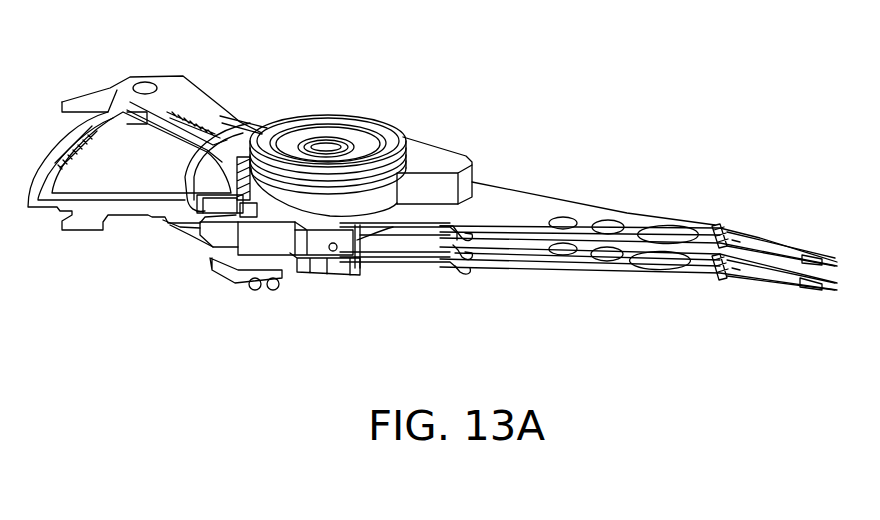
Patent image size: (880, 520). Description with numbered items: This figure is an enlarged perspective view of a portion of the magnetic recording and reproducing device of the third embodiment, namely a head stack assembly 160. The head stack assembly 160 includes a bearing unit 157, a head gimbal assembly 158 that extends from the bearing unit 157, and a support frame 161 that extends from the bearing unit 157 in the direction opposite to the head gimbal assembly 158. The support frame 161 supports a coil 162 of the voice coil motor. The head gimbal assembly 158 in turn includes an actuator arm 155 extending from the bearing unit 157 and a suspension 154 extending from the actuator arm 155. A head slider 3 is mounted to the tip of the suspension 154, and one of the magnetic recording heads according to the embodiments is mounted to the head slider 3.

The head slider 3 is at (813, 260).
The suspension 154 is at (778, 251).
The actuator arm 155 is at (633, 225).
The bearing unit 157 is at (344, 92).
The head gimbal assembly 158 is at (568, 185).
The head stack assembly 160 is at (530, 112).
The support frame 161 is at (183, 92).
The coil 162 is at (112, 184).